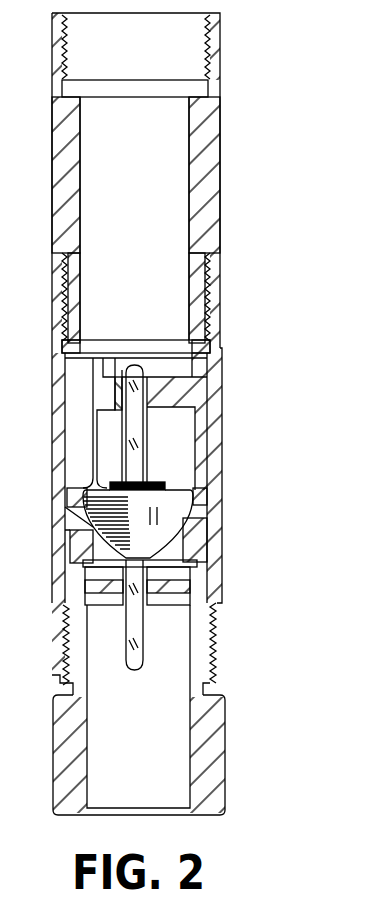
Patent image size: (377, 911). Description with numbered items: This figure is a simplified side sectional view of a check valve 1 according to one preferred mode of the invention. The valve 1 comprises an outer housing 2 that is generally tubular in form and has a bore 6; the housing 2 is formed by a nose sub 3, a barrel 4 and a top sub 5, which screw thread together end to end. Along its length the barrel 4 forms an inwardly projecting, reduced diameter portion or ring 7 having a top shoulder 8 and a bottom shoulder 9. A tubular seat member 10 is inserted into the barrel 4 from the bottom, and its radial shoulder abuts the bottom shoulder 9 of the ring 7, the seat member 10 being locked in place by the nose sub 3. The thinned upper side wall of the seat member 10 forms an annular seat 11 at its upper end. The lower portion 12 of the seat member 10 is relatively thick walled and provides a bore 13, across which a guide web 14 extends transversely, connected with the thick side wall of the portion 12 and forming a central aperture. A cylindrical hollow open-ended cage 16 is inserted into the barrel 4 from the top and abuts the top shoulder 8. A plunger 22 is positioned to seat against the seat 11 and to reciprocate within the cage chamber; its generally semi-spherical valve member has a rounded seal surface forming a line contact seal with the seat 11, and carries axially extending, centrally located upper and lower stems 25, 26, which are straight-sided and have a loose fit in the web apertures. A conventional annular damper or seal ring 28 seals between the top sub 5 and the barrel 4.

The valve 1 is at (247, 442).
The outer housing 2 is at (220, 607).
The nose sub 3 is at (215, 763).
The barrel 4 is at (222, 373).
The top sub 5 is at (222, 190).
The bore 6 is at (149, 201).
The ring 7 is at (165, 515).
The top shoulder 8 is at (207, 486).
The bottom shoulder 9 is at (207, 545).
The seat member 10 is at (66, 563).
The annular seat 11 is at (153, 516).
The lower portion 12 is at (200, 594).
The bore 13 is at (177, 584).
The guide web 14 is at (106, 590).
The cage 16 is at (207, 414).
The plunger 22 is at (165, 483).
The upper stem 25 is at (146, 424).
The lower stem 26 is at (133, 672).
The seal ring 28 is at (188, 340).